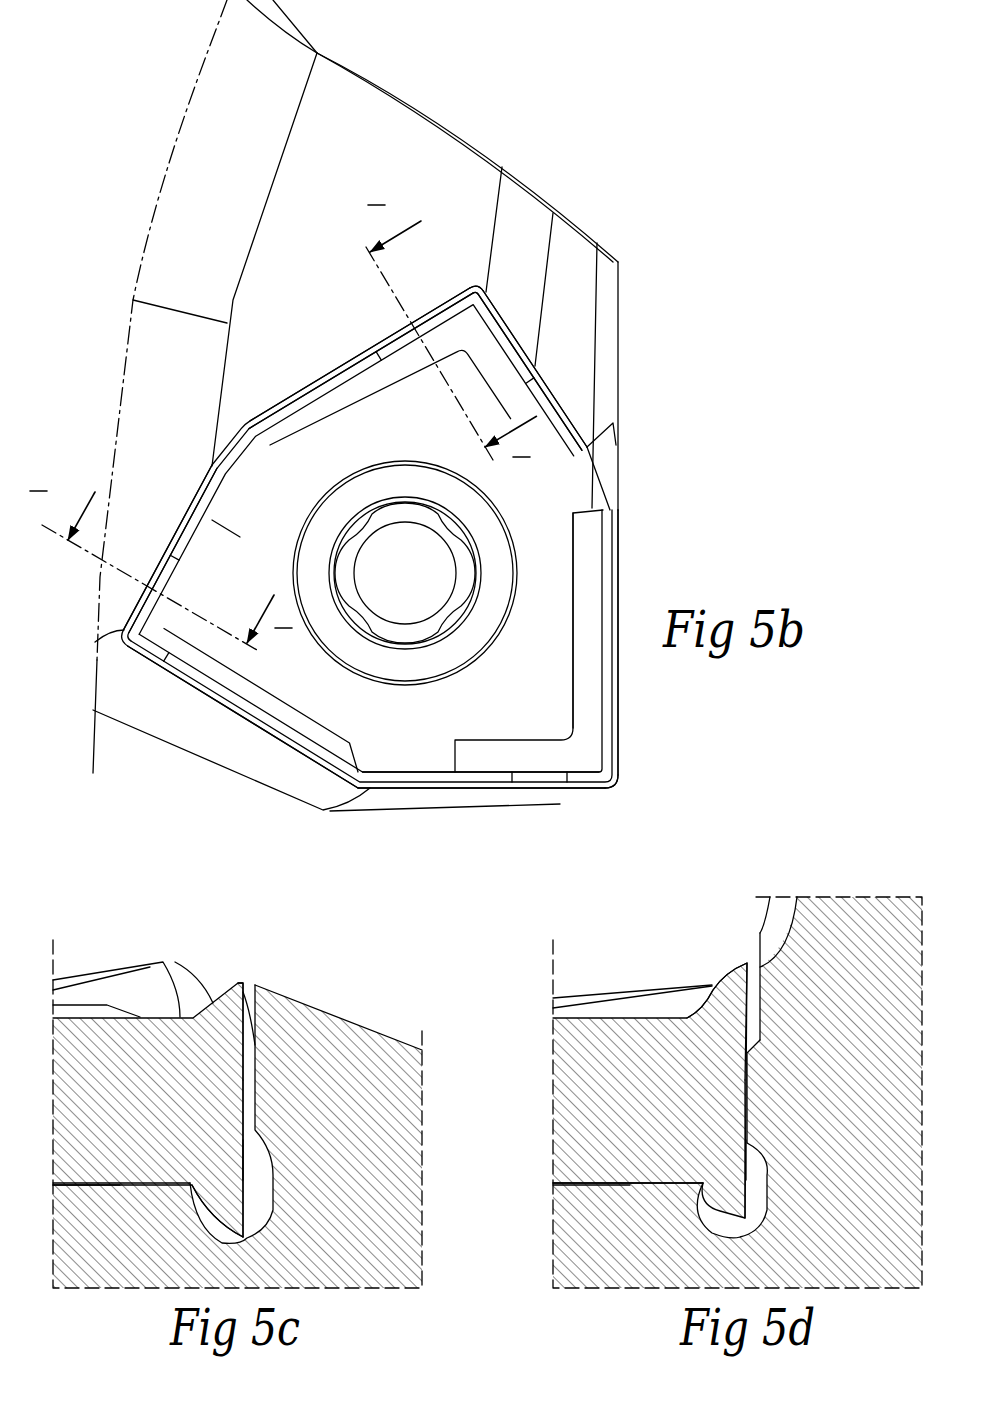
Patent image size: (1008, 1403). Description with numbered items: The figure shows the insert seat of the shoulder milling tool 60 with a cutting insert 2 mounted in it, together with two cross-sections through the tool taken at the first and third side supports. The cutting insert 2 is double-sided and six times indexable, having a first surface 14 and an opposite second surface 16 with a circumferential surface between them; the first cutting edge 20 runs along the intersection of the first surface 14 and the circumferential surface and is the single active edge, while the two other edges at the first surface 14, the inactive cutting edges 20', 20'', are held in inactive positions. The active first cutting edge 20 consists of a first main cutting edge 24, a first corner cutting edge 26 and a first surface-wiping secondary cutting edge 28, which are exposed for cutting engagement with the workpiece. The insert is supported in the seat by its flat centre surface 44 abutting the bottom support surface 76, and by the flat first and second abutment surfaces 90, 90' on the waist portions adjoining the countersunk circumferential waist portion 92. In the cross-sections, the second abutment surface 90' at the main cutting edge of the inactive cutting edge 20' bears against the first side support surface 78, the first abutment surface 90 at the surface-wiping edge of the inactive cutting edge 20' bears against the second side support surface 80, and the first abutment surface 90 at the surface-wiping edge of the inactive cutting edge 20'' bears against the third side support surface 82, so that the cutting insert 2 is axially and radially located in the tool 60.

In FIG. 5B, the cutting insert 2 is at (385, 757).
In FIG. 5C, the cutting insert 2 is at (148, 1099).
In FIG. 5D, the cutting insert 2 is at (650, 1090).
In FIG. 5B, the first surface 14 is at (568, 550).
In FIG. 5C, the second surface 16 is at (189, 1187).
In FIG. 5B, the first cutting edge 20 is at (520, 805).
In FIG. 5B, the inactive cutting edge 20' is at (575, 273).
In FIG. 5B, the inactive cutting edge 20'' is at (229, 717).
In FIG. 5B, the first main cutting edge 24 is at (614, 706).
In FIG. 5B, the first corner cutting edge 26 is at (603, 783).
In FIG. 5B, the first surface-wiping secondary cutting edge 28 is at (524, 788).
In FIG. 5C, the flat centre surface 44 is at (96, 1184).
In FIG. 5D, the flat centre surface 44 is at (603, 1185).
In FIG. 5B, the shoulder milling tool 60 is at (515, 148).
In FIG. 5C, the shoulder milling tool 60 is at (237, 1136).
In FIG. 5D, the shoulder milling tool 60 is at (737, 1092).
In FIG. 5C, the bottom support surface 76 is at (123, 1180).
In FIG. 5D, the bottom support surface 76 is at (625, 1180).
In FIG. 5B, the first side support surface 78 is at (466, 293).
In FIG. 5C, the first side support surface 78 is at (242, 1078).
In FIG. 5B, the second side support surface 80 is at (538, 366).
In FIG. 5B, the third side support surface 82 is at (168, 545).
In FIG. 5D, the third side support surface 82 is at (743, 1077).
In FIG. 5B, the first abutment surface 90 is at (351, 463).
In FIG. 5D, the first abutment surface 90 is at (804, 1092).
In FIG. 5B, the second abutment surface 90' is at (360, 341).
In FIG. 5C, the second abutment surface 90' is at (304, 1103).
In FIG. 5B, the countersunk circumferential waist portion 92 is at (328, 365).
In FIG. 5C, the countersunk circumferential waist portion 92 is at (250, 1150).
In FIG. 5D, the countersunk circumferential waist portion 92 is at (752, 1148).